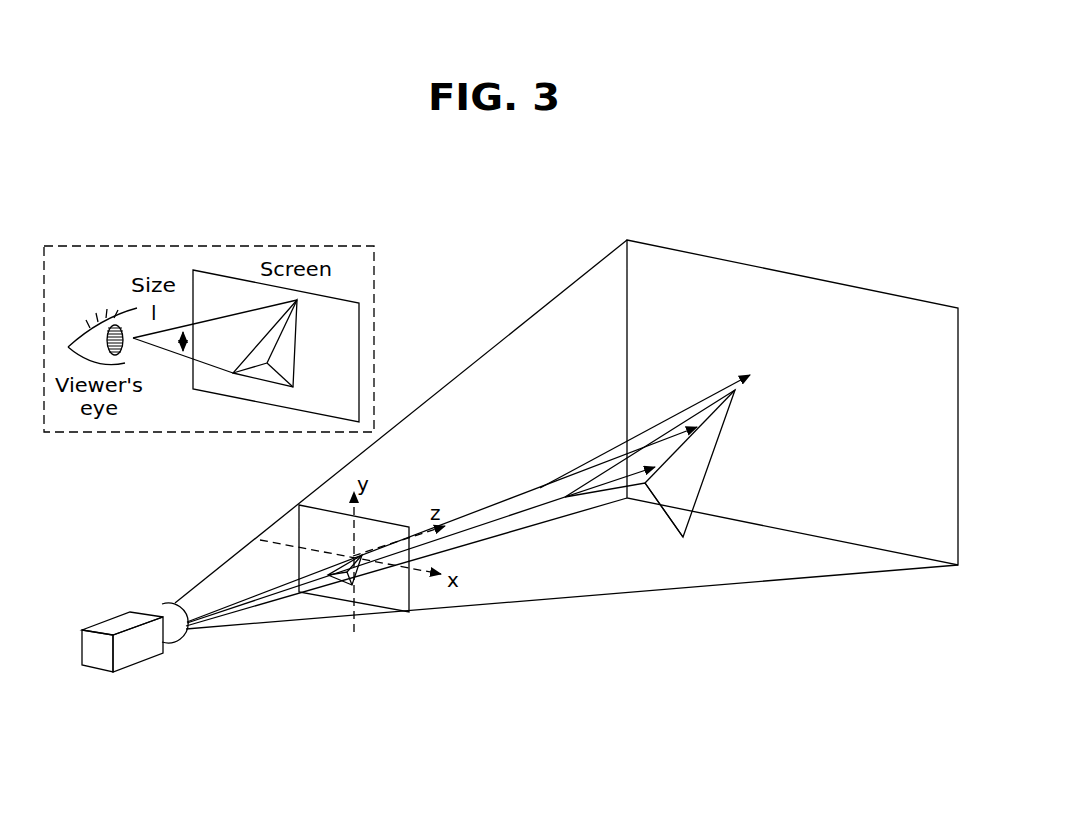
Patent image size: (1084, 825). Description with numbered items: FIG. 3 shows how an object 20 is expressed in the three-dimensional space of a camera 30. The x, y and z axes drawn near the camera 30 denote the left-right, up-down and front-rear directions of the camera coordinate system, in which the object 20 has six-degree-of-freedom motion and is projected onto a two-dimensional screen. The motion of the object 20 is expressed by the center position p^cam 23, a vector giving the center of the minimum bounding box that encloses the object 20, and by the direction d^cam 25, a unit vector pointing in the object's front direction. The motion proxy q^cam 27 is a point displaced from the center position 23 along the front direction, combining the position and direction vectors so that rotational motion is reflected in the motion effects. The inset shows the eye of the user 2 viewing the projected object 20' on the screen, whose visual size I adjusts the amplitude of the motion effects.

The user 2 is at (104, 328).
The object projected to the screen 20' is at (332, 343).
The object 20 is at (674, 463).
The center position p^cam 23 is at (783, 499).
The direction d^cam 25 is at (699, 407).
The motion proxy q^cam 27 is at (442, 518).
The camera 30 is at (138, 655).